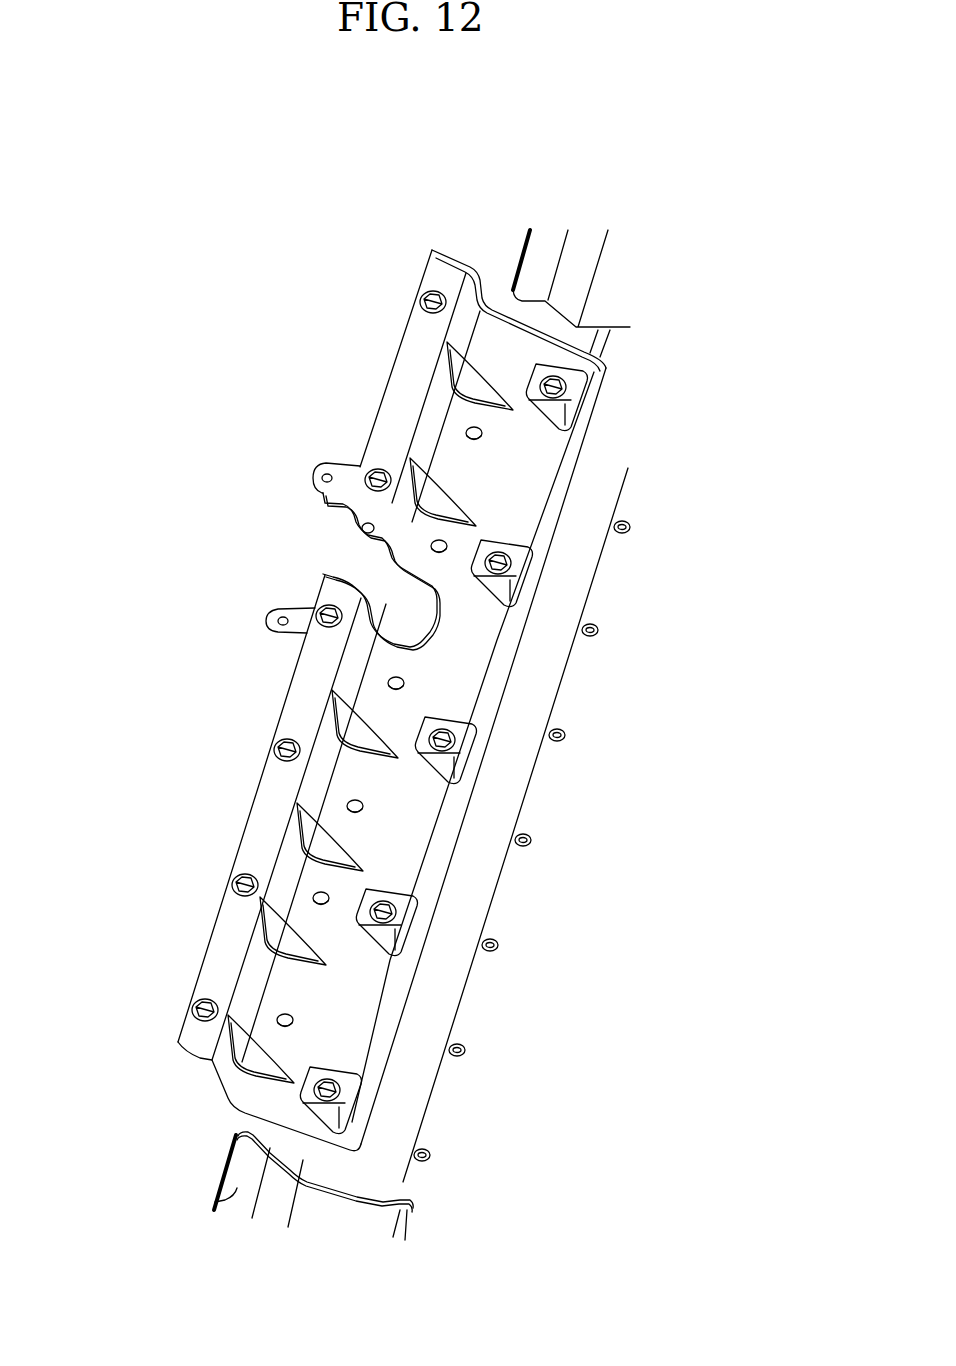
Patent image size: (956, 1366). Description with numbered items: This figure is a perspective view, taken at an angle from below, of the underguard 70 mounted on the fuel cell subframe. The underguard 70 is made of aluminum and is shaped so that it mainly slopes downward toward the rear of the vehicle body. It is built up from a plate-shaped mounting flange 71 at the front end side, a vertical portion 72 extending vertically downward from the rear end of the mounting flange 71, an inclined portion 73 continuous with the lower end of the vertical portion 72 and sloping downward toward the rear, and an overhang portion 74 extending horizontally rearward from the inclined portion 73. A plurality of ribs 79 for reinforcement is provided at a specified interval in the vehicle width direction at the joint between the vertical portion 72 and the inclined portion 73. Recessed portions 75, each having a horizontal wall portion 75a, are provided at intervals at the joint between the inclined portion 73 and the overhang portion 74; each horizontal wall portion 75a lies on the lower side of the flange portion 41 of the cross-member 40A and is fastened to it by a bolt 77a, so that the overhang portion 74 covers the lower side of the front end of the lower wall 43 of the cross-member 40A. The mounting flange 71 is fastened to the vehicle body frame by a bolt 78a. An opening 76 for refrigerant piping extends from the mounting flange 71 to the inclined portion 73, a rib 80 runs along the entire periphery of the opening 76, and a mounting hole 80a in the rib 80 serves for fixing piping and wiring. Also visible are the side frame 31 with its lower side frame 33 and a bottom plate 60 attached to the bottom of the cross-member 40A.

The underguard 70 is at (455, 250).
The vertical portion 72 is at (432, 418).
The mounting flange 71 is at (268, 808).
The bottom plate 60 is at (447, 1065).
The overhang portion 74 is at (503, 642).
The lower wall 43 is at (437, 983).
The inclined portion 73 is at (513, 490).
The ribs 79 is at (463, 382).
The recessed portions 75 is at (462, 748).
The horizontal wall portion 75a is at (423, 750).
The bolt 77a is at (330, 1095).
The bolt 78a is at (203, 1012).
The rib 80 is at (443, 638).
The mounting hole 80a is at (322, 510).
The opening 76 is at (393, 600).
The side frame 31 is at (237, 1150).
The lower side frame 33 is at (215, 1203).
The flange portion 41 is at (302, 1158).
The cross-member 40A is at (371, 1183).